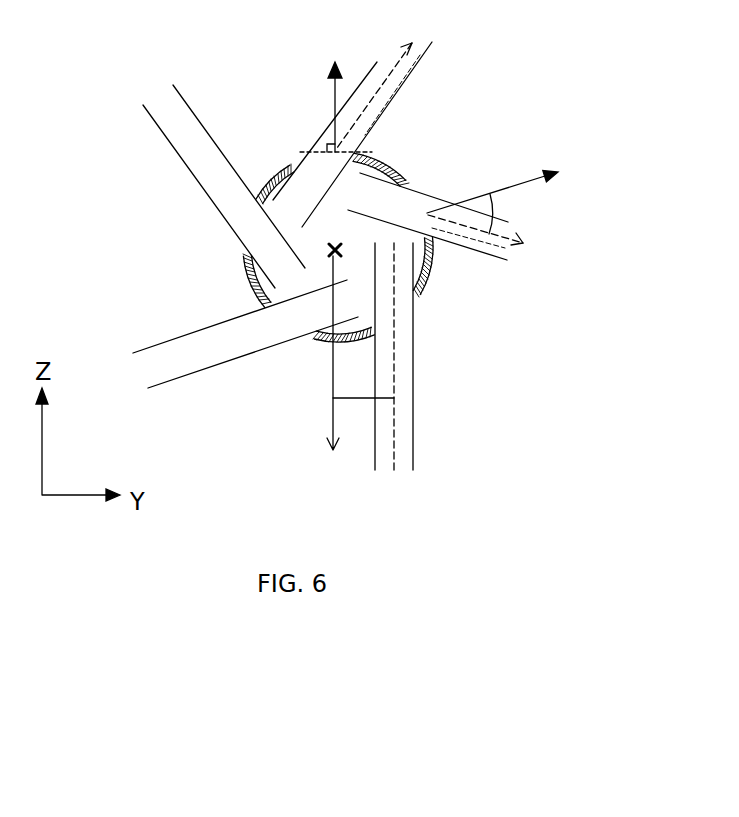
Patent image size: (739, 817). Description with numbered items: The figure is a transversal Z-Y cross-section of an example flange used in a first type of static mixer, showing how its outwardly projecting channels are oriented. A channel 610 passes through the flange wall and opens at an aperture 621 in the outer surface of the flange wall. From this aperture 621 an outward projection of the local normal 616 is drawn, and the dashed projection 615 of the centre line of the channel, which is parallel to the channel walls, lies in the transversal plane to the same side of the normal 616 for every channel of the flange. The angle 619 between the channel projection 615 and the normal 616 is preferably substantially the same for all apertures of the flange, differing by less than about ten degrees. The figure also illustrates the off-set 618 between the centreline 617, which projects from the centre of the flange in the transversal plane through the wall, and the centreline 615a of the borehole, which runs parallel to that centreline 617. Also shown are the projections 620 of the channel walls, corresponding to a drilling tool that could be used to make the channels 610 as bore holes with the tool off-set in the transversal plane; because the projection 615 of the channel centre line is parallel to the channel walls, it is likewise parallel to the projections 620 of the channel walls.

The channel 610 is at (367, 140).
The projection of the channel centre line 615 is at (382, 60).
The centreline of the borehole 615a is at (397, 376).
The outward projection of the local normal 616 is at (333, 108).
The centreline projecting from the centre of the flange 617 is at (333, 380).
The off-set 618 is at (355, 400).
The angle 619 is at (497, 209).
The projections of the channel walls 620 is at (480, 251).
The opening (aperture) of the channel 621 is at (327, 147).